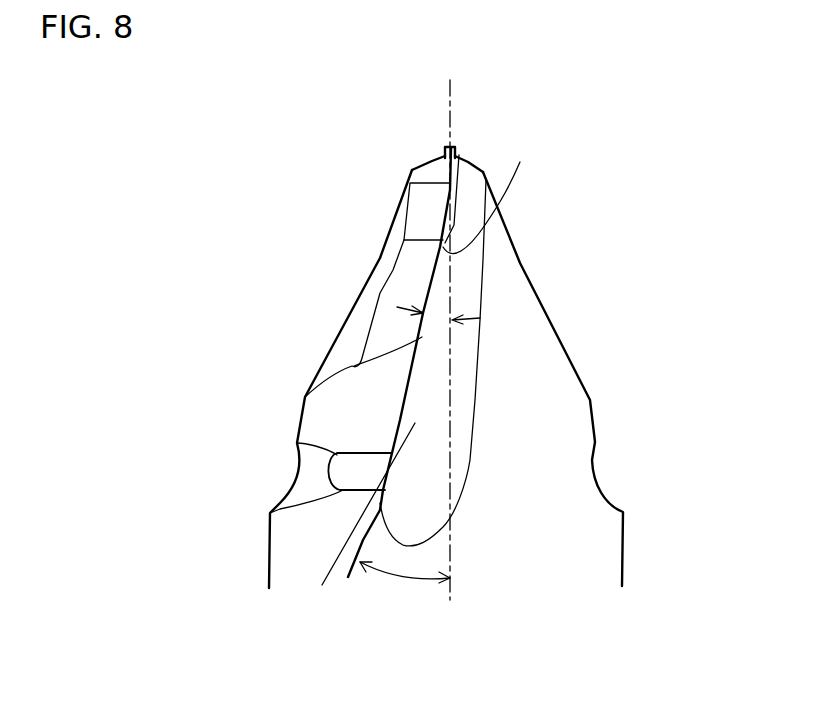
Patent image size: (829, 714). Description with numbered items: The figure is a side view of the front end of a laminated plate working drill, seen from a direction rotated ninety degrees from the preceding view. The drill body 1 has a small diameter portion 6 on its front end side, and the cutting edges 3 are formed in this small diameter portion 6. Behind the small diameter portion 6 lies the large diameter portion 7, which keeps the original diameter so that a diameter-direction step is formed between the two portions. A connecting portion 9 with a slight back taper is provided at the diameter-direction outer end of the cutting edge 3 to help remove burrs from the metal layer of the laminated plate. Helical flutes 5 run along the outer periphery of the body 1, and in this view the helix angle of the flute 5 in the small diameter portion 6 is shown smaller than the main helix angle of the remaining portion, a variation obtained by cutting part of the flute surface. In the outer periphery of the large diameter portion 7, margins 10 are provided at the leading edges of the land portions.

The body 1 is at (636, 558).
The cutting edge 3 is at (443, 245).
The helical flute 5 is at (467, 300).
The small diameter portion 6 is at (637, 147).
The large diameter portion 7 is at (268, 570).
The connecting portion 9 is at (298, 425).
The margin 10 is at (345, 572).